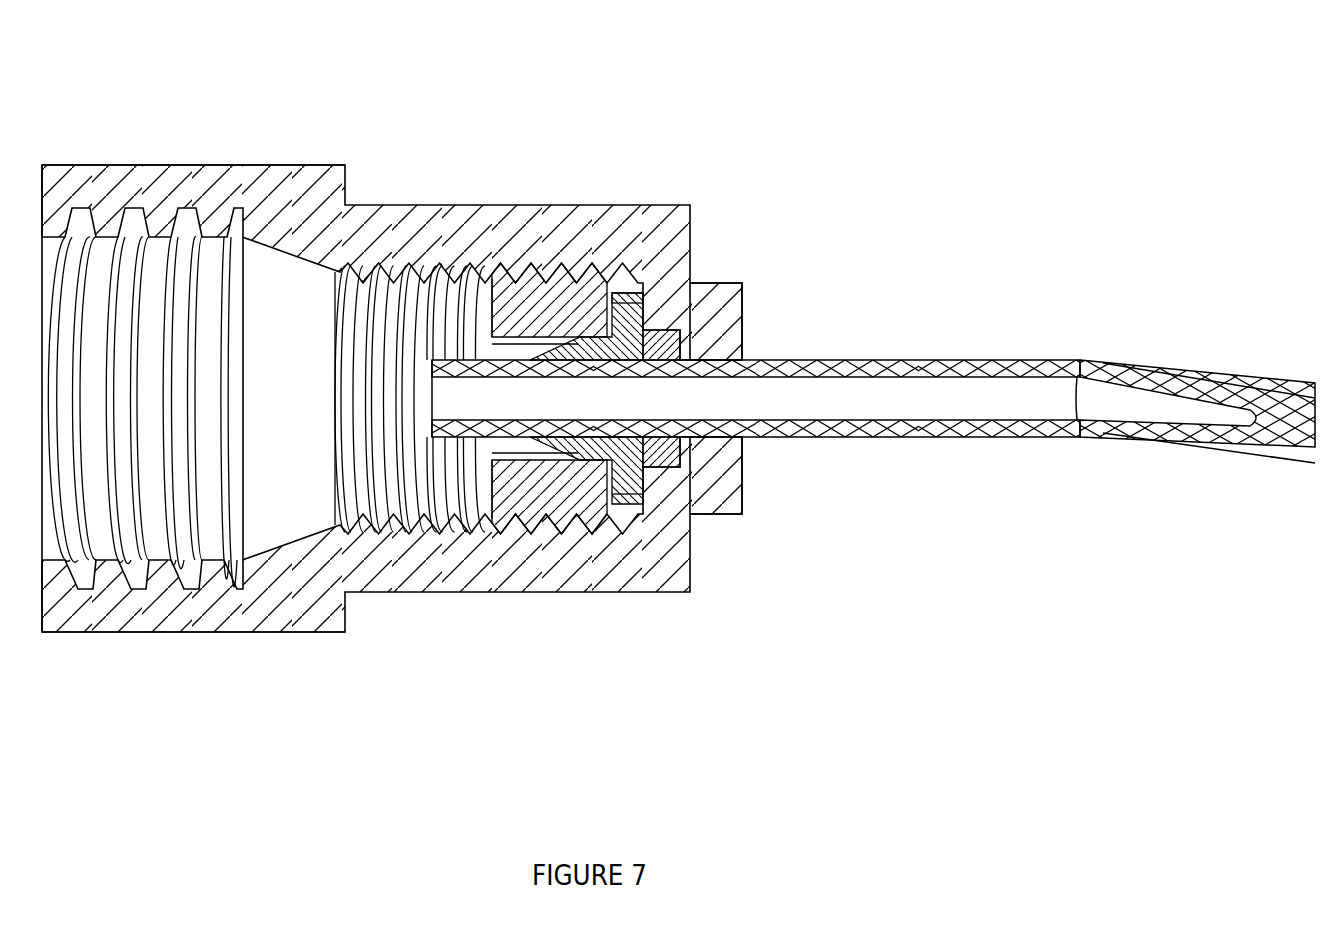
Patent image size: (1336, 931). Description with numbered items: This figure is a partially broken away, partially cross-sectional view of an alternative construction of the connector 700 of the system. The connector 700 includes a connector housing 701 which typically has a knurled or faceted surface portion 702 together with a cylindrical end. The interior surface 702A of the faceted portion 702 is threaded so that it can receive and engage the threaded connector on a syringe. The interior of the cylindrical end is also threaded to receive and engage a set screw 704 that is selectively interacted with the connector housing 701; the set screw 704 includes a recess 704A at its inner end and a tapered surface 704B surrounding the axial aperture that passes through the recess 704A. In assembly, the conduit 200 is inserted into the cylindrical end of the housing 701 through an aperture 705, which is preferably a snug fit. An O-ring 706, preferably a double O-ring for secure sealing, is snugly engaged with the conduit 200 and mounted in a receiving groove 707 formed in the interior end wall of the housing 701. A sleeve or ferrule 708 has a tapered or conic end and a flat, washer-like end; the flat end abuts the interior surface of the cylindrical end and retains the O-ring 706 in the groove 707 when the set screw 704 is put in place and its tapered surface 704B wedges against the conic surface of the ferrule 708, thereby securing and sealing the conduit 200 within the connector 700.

The connector 700 is at (678, 390).
The connector housing 701 is at (565, 572).
The knurled or faceted surface portion 702 is at (302, 185).
The interior surface 702A is at (68, 577).
The set screw 704 is at (553, 297).
The recess 704A is at (632, 283).
The tapered surface 704B is at (603, 333).
The aperture 705 is at (720, 358).
The O-ring 706 is at (663, 343).
The receiving groove 707 is at (662, 465).
The sleeve or ferrule 708 is at (627, 485).
The conduit 200 is at (943, 358).